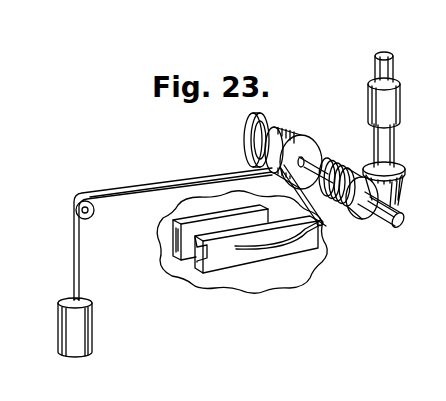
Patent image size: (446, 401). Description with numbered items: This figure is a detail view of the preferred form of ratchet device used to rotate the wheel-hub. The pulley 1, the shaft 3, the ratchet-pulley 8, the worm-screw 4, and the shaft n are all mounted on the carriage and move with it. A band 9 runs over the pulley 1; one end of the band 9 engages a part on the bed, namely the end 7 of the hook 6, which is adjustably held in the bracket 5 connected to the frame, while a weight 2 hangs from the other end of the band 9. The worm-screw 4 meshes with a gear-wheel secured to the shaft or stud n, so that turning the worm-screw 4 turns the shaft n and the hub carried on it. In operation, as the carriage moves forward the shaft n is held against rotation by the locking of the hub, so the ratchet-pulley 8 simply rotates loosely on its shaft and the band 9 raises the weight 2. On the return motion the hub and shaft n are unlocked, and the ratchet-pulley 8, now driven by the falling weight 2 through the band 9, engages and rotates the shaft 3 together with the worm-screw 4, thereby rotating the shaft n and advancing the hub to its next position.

The pulley 1 is at (94, 212).
The weight 2 is at (58, 322).
The shaft 3 is at (318, 164).
The worm-screw 4 is at (340, 206).
The bracket 5 is at (222, 266).
The hook 6 is at (282, 253).
The end of the hook 7 is at (284, 233).
The ratchet-pulley 8 is at (284, 131).
The band 9 is at (291, 192).
The shaft n is at (396, 86).